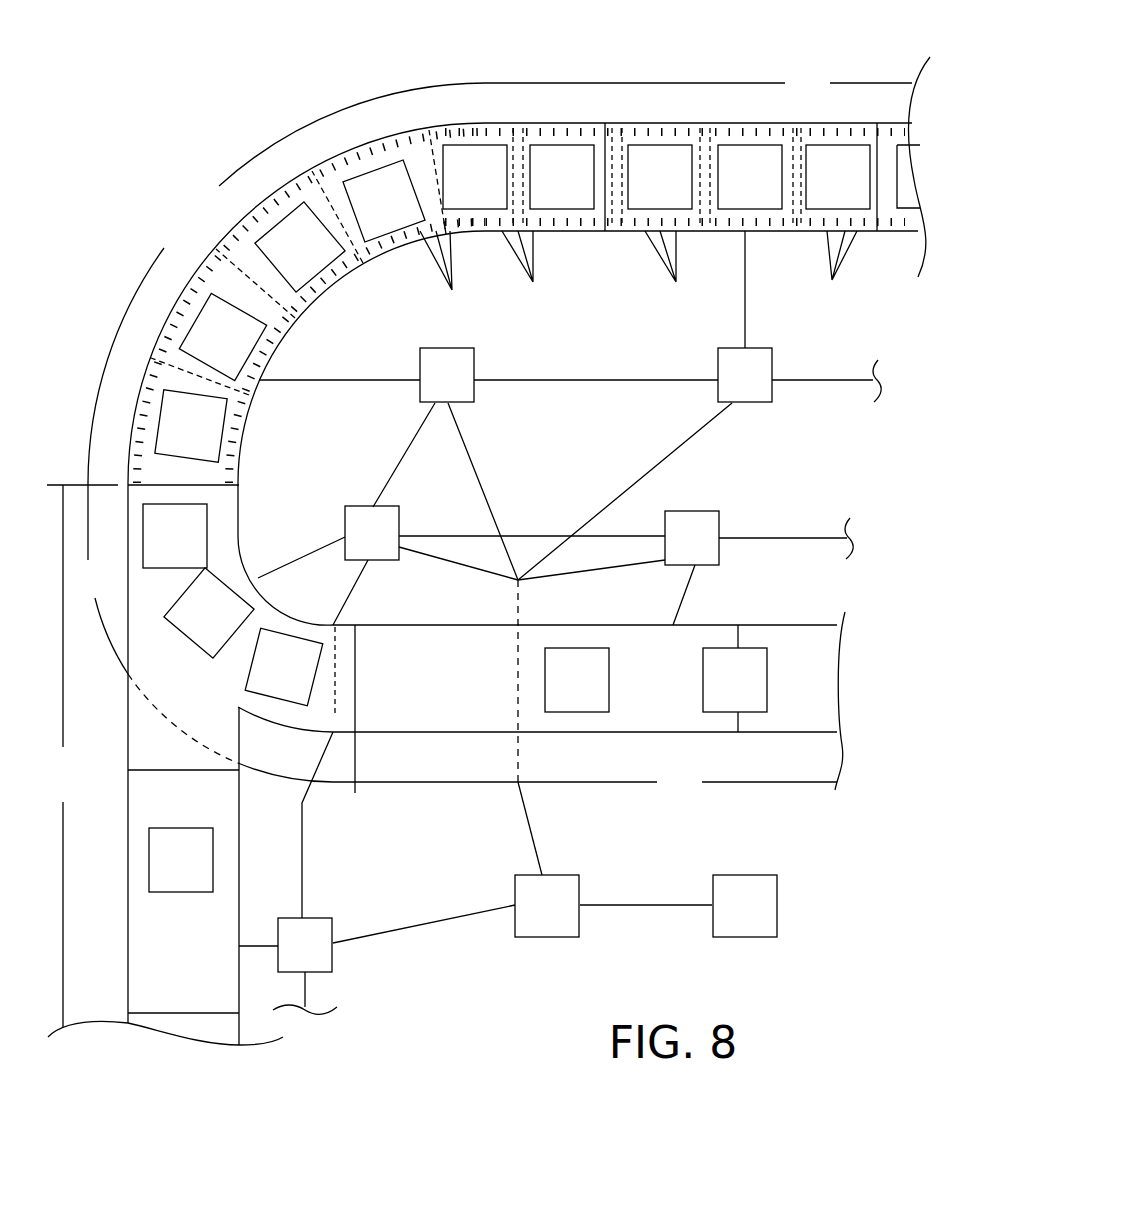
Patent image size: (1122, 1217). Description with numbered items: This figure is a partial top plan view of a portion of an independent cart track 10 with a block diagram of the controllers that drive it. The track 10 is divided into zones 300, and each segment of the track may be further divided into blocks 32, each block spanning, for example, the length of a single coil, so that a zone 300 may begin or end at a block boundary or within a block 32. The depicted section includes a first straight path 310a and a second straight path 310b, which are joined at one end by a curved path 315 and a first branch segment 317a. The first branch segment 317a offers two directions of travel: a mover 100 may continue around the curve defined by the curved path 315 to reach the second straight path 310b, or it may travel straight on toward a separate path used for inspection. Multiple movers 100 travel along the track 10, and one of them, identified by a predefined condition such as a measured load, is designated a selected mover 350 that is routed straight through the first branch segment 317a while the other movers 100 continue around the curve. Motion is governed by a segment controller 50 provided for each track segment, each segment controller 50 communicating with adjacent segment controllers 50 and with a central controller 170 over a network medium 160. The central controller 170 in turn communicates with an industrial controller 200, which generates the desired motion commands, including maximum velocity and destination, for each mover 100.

The track 10 is at (506, 527).
The zone 300 is at (318, 105).
The block 32 is at (638, 278).
The first straight path 310a is at (873, 282).
The second straight path 310b is at (820, 597).
The curved path 315 is at (246, 427).
The first branch segment 317a is at (242, 532).
The segment controller 50 is at (522, 681).
The network medium 160 is at (397, 472).
The mover 100 is at (528, 558).
The central controller 170 is at (547, 906).
The industrial controller 200 is at (745, 906).
The selected mover 350 is at (174, 899).